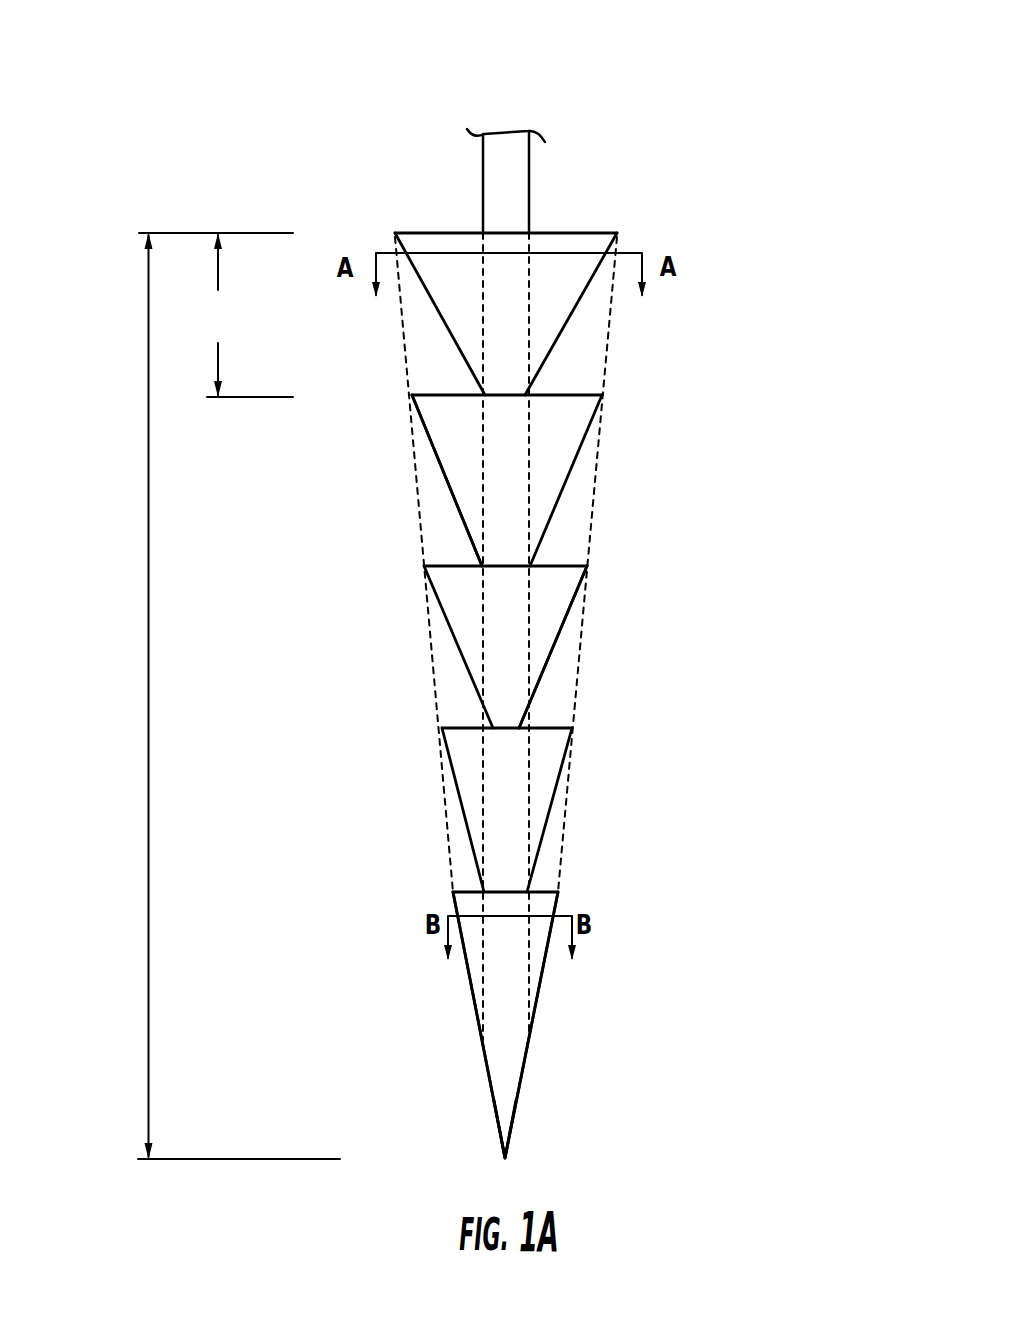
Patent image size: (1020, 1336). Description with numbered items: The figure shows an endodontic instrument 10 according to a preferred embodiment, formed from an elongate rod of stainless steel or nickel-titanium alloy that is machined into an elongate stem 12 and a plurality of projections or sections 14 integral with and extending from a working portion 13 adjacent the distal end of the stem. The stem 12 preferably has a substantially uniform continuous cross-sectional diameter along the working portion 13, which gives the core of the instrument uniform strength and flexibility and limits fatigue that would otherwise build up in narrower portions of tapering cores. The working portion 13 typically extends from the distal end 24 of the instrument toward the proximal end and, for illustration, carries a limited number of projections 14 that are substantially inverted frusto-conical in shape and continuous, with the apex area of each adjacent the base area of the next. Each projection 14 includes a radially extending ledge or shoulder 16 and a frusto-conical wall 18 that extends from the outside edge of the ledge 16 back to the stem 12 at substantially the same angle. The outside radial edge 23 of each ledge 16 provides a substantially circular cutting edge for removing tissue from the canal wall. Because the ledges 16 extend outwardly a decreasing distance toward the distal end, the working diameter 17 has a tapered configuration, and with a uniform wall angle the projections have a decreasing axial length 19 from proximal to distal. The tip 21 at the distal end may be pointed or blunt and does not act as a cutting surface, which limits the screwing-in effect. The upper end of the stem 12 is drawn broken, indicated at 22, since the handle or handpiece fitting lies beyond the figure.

The endodontic instrument 10 is at (633, 70).
The elongate stem 12 is at (516, 193).
The working portion 13 is at (148, 690).
The projections 14 is at (552, 473).
The ledge 16 is at (458, 567).
The working diameter 17 is at (594, 492).
The frusto-conical wall 18 is at (553, 642).
The axial length 19 is at (248, 315).
The tip 21 is at (501, 1148).
The upper end of rod 22 is at (483, 135).
The outside radial cutting edge 23 is at (617, 233).
The distal end 24 is at (505, 1089).